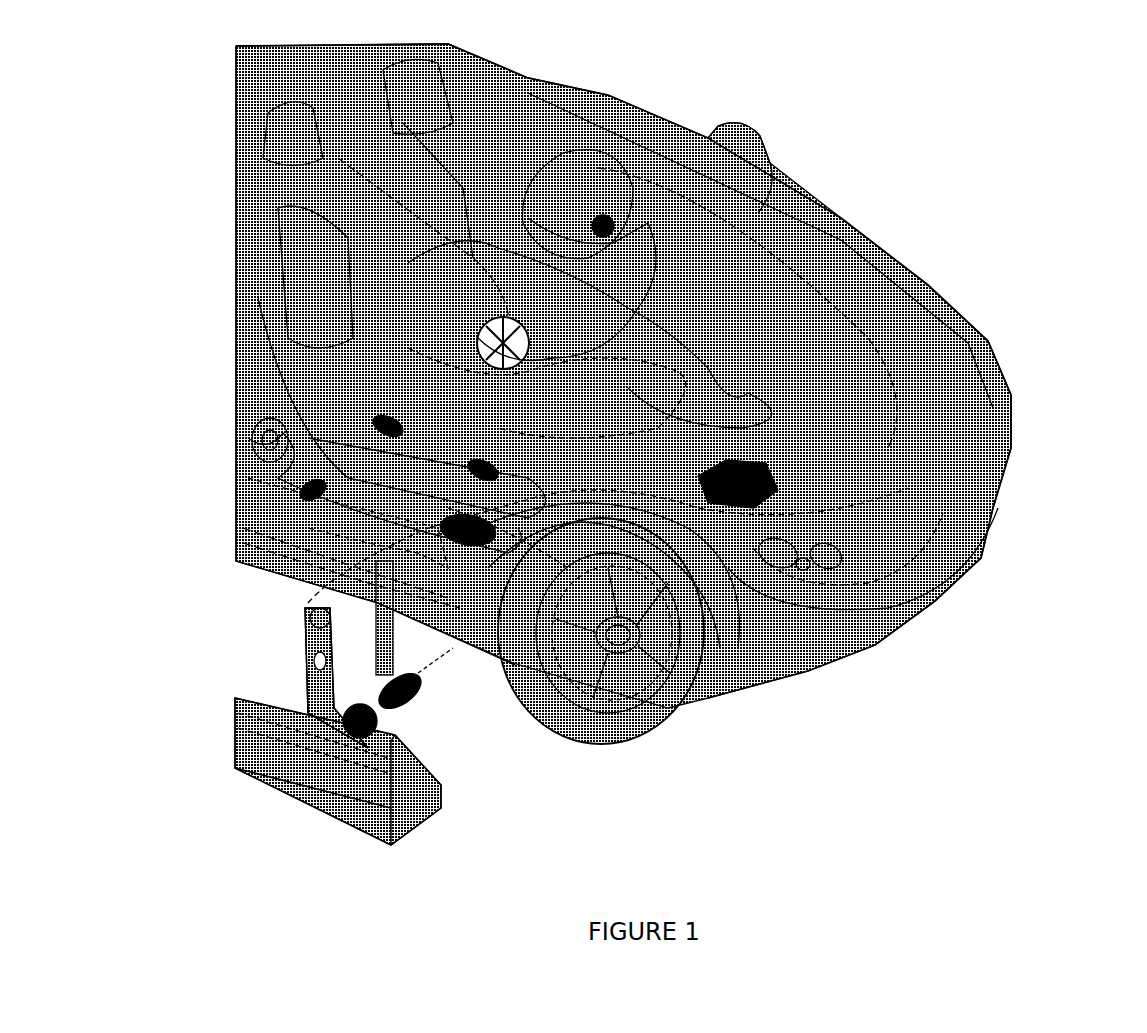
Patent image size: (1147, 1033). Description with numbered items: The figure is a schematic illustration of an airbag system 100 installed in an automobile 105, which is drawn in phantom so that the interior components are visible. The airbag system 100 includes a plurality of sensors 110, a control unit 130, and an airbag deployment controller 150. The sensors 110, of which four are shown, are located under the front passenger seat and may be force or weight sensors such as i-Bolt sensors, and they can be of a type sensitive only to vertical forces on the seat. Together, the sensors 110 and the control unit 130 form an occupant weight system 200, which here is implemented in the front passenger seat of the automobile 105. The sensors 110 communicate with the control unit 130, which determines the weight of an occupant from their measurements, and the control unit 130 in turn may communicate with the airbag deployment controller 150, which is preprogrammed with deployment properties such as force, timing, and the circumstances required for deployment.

The airbag system 100 is at (204, 98).
The automobile 105 is at (603, 444).
The sensors 110 is at (372, 414).
The control unit 130 is at (300, 598).
The airbag deployment controller 150 is at (786, 480).
The occupant weight system 200 is at (122, 355).